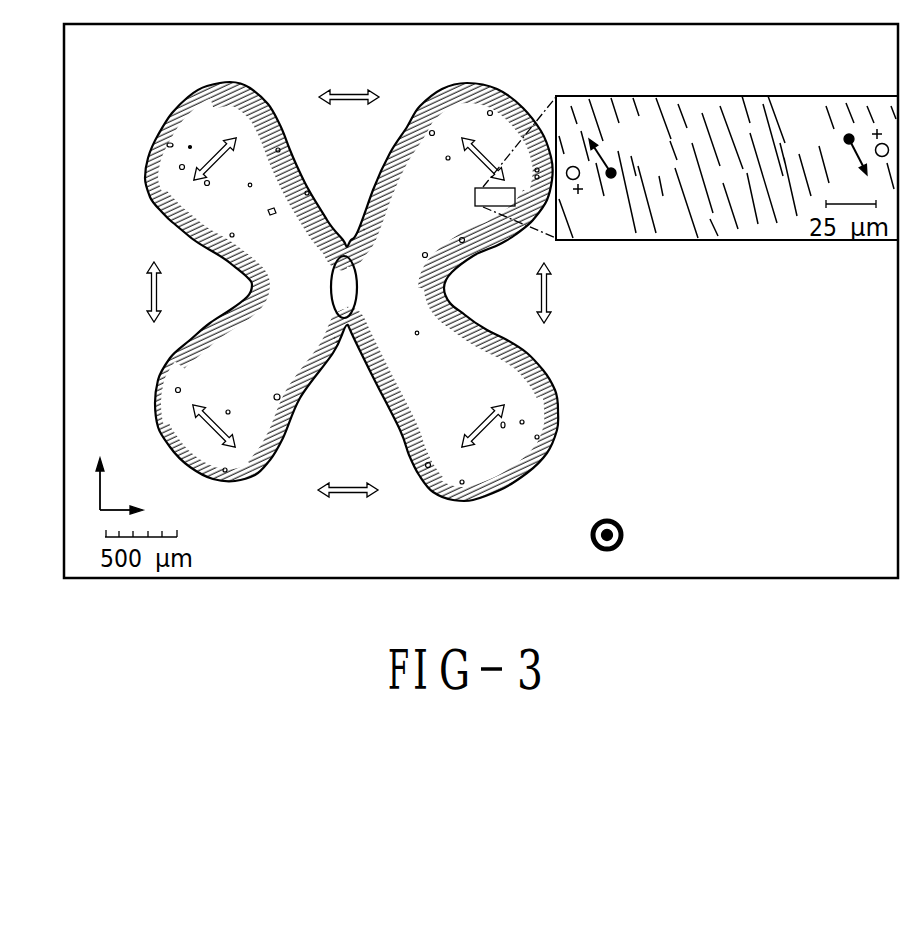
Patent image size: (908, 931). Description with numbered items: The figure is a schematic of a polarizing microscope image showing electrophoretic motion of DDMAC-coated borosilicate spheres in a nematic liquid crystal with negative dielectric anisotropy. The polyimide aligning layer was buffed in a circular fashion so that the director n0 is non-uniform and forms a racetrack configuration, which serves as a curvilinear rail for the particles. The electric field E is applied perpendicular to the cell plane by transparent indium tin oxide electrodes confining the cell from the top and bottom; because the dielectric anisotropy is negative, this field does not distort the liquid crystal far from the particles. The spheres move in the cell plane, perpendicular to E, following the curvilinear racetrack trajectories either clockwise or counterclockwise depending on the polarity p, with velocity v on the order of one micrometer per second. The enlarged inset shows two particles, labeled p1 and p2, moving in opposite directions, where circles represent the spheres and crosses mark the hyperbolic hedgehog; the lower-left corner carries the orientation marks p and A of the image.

The first polarization direction p1 is at (594, 186).
The second polarization direction p2 is at (837, 147).
The velocity v is at (836, 166).
The polarity p is at (100, 467).
The A axis A is at (134, 510).
The non-uniform director n0 is at (358, 522).
The electric field E is at (586, 536).